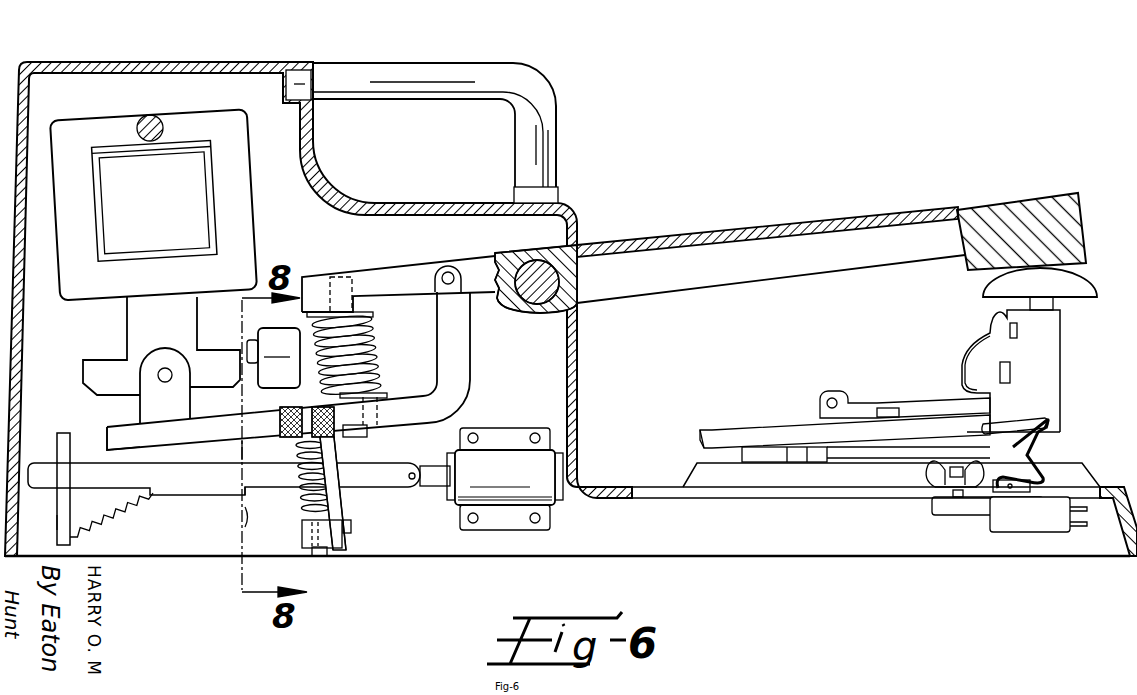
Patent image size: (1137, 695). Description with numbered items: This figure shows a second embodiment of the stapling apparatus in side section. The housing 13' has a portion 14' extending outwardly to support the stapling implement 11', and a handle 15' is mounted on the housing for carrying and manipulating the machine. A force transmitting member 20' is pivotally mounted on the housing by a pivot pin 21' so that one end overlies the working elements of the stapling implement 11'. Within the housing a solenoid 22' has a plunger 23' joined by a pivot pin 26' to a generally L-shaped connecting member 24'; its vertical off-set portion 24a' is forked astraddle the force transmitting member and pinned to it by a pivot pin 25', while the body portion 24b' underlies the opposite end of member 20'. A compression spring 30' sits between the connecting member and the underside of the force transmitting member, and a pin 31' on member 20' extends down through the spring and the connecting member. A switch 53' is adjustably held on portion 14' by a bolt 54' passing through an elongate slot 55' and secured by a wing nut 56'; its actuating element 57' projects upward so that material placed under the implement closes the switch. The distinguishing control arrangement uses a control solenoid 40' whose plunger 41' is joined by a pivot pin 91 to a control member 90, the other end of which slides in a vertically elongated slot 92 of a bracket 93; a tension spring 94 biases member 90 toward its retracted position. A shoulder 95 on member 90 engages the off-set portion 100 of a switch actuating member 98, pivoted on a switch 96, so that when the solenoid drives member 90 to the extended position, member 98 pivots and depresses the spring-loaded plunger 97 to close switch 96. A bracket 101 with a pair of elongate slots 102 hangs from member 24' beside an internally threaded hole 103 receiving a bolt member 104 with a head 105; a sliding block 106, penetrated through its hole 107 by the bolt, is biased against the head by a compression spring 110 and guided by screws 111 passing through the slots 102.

The housing 13' is at (318, 292).
The portion of housing 14' is at (571, 500).
The handle 15' is at (435, 115).
The force transmitting member 20' is at (831, 238).
The pivot pin 21' is at (536, 268).
The solenoid 22' is at (172, 204).
The plunger 23' is at (161, 346).
The connecting member 24' is at (329, 353).
The off-set portion 24a' is at (479, 324).
The body portion 24b' is at (111, 422).
The pivot pin 25' is at (450, 256).
The pivot pin 26' is at (165, 373).
The compression spring 30' is at (365, 356).
The pin 31' is at (337, 270).
The control solenoid 40' is at (505, 467).
The plunger 41' is at (431, 458).
The stapling implement 11' is at (986, 371).
The switch 53' is at (1022, 526).
The bolt 54' is at (973, 519).
The elongate slot 55' is at (891, 497).
The wing nut 56' is at (955, 468).
The actuating element 57' is at (1044, 454).
The control member 90 is at (200, 493).
The pivot pin 91 is at (414, 480).
The slot 92 is at (57, 435).
The bracket 93 is at (57, 522).
The tension spring 94 is at (100, 530).
The shoulder 95 is at (247, 490).
The switch 96 is at (273, 358).
The spring-loaded plunger 97 is at (258, 372).
The switch actuating member 98 is at (242, 448).
The off-set portion 100 is at (246, 530).
The bracket 101 is at (338, 445).
The elongate slots 102 is at (341, 474).
The internally threaded hole 103 is at (296, 404).
The bolt member 104 is at (299, 436).
The head 105 is at (320, 556).
The sliding block 106 is at (302, 532).
The hole 107 is at (310, 537).
The compression spring 110 is at (298, 505).
The screws 111 is at (352, 527).